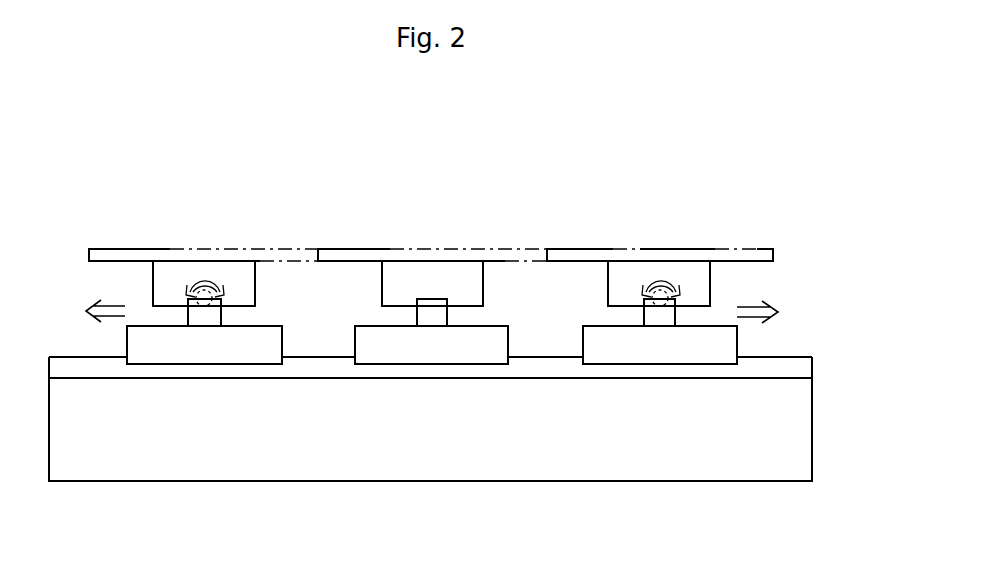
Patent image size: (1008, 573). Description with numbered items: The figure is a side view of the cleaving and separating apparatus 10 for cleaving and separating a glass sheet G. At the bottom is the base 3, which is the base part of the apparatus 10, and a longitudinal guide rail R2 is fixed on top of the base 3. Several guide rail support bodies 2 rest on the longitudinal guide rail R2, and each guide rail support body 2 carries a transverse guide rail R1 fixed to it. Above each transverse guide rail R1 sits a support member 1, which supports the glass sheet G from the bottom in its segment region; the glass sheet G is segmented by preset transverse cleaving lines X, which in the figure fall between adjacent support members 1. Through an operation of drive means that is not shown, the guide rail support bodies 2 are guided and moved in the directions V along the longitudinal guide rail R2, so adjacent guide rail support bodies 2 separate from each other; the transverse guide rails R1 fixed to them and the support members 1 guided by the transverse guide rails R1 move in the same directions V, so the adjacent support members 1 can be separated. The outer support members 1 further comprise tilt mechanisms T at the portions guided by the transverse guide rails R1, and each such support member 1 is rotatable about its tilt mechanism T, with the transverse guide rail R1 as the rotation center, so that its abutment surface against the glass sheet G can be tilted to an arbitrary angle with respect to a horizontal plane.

The cleaving and separating apparatus 10 is at (766, 207).
The support member 1 is at (153, 282).
The guide rail support body 2 is at (282, 343).
The base 3 is at (812, 428).
The glass sheet G is at (127, 248).
The tilt mechanism T is at (188, 308).
The transverse guide rail R1 is at (221, 316).
The longitudinal guide rail R2 is at (812, 365).
The preset transverse cleaving line X is at (318, 250).
The direction of movement V is at (432, 312).